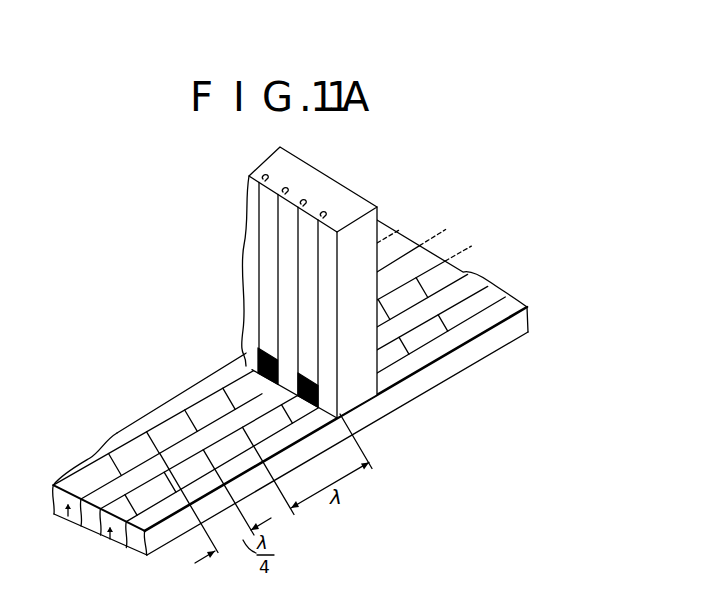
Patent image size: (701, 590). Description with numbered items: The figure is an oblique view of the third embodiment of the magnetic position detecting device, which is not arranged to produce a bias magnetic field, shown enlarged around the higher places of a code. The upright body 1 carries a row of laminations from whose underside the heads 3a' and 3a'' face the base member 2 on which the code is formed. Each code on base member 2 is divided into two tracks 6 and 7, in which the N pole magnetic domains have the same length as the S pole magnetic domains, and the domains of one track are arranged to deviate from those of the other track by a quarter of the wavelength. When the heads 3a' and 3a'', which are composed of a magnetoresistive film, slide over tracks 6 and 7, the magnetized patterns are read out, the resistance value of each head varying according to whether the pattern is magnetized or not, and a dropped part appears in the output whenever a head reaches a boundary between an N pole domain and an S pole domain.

The armature core (movable element) 1 is at (378, 237).
The stator magnet track (base member) 2 is at (494, 343).
The head 3a' is at (360, 420).
The head 3a'' is at (241, 353).
The track 6 is at (111, 541).
The track 7 is at (69, 519).